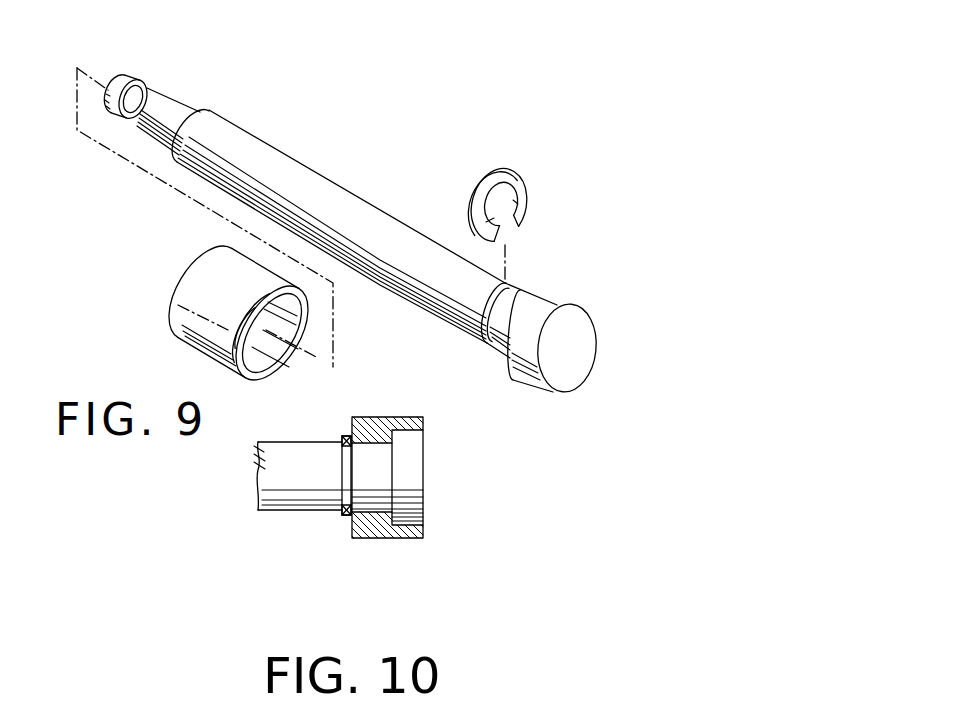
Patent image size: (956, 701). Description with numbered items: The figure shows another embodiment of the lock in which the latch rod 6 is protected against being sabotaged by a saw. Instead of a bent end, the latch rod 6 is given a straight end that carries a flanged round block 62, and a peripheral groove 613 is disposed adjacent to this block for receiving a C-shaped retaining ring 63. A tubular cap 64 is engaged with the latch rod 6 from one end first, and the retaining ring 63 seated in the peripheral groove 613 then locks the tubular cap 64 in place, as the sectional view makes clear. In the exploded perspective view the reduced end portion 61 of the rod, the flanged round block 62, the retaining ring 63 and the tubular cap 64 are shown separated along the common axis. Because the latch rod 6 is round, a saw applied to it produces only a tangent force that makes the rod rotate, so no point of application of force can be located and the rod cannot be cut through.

In FIG. 9, the latch rod 6 is at (357, 152).
In FIG. 9, the reduced shaft portion with head 61 is at (175, 82).
In FIG. 9, the flanged round block 62 is at (561, 312).
In FIG. 10, the flanged round block 62 is at (413, 475).
In FIG. 9, the C-shaped retaining ring 63 is at (527, 178).
In FIG. 10, the C-shaped retaining ring 63 is at (347, 440).
In FIG. 9, the tubular cap 64 is at (213, 273).
In FIG. 10, the tubular cap 64 is at (367, 427).
In FIG. 9, the peripheral groove 613 is at (514, 287).
In FIG. 10, the peripheral groove 613 is at (347, 477).